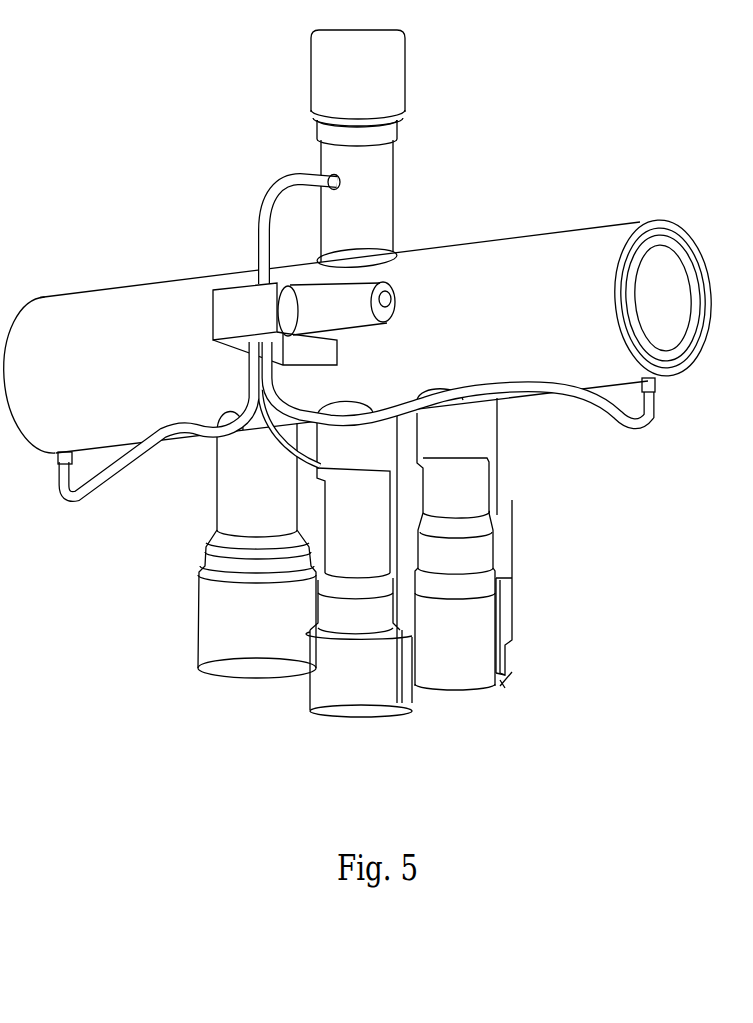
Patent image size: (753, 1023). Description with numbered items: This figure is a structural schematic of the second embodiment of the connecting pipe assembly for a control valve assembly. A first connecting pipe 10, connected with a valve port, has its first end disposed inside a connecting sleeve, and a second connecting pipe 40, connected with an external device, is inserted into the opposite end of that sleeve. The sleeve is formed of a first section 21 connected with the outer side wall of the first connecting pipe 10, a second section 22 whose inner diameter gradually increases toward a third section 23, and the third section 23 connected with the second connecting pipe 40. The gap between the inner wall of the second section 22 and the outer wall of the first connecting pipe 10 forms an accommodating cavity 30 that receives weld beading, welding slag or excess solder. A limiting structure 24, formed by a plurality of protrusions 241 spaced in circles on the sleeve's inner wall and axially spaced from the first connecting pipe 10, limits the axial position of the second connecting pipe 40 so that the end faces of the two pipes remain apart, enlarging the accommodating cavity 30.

The first connecting pipe 10 is at (488, 509).
The first section 21 is at (497, 528).
The second section 22 is at (500, 550).
The accommodating cavity 30 is at (500, 557).
The limiting structure 24 is at (497, 580).
The third section 23 is at (498, 603).
The second connecting pipe 40 is at (507, 680).
The protrusion 241 is at (398, 620).